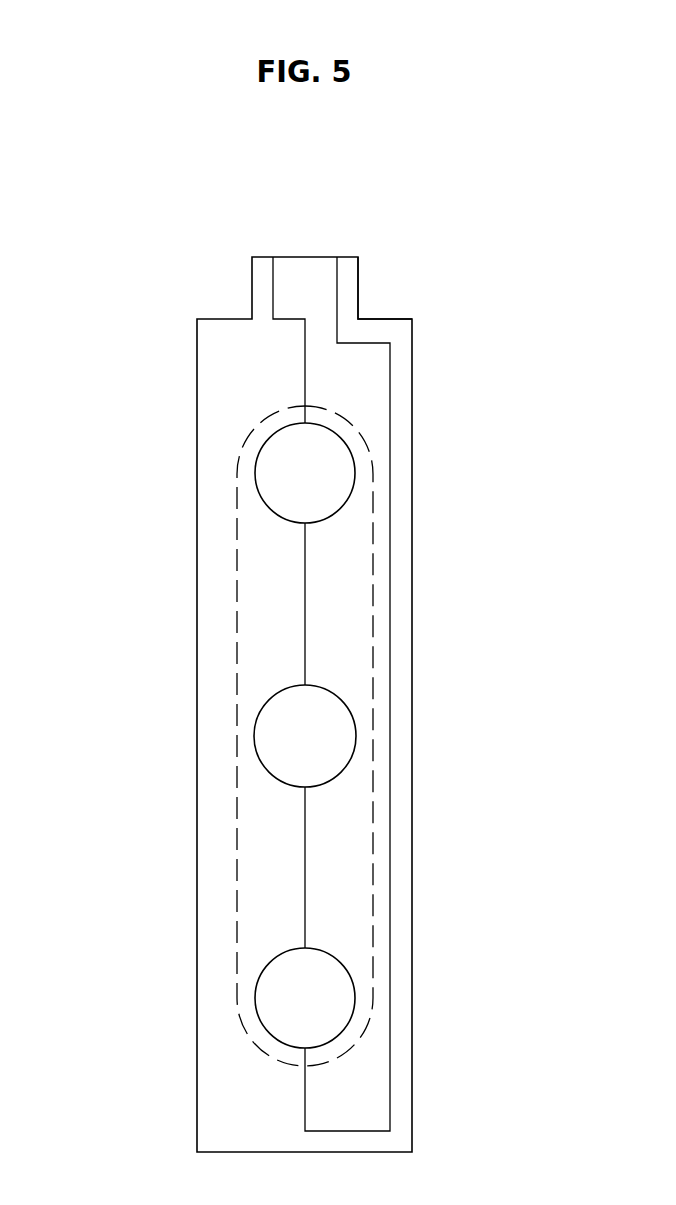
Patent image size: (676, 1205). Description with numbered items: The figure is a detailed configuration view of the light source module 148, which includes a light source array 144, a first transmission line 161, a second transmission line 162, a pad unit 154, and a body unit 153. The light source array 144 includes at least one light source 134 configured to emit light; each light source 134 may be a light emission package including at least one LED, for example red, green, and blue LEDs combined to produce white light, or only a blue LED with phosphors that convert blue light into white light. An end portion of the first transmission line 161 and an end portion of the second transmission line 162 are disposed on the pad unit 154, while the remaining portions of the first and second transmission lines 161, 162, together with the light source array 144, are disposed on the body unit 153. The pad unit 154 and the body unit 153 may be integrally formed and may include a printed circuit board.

The light source module 148 is at (127, 183).
The light source 134 is at (298, 475).
The light source array 144 is at (237, 607).
The body unit 153 is at (412, 597).
The pad unit 154 is at (358, 302).
The first transmission line 161 is at (273, 272).
The second transmission line 162 is at (338, 272).